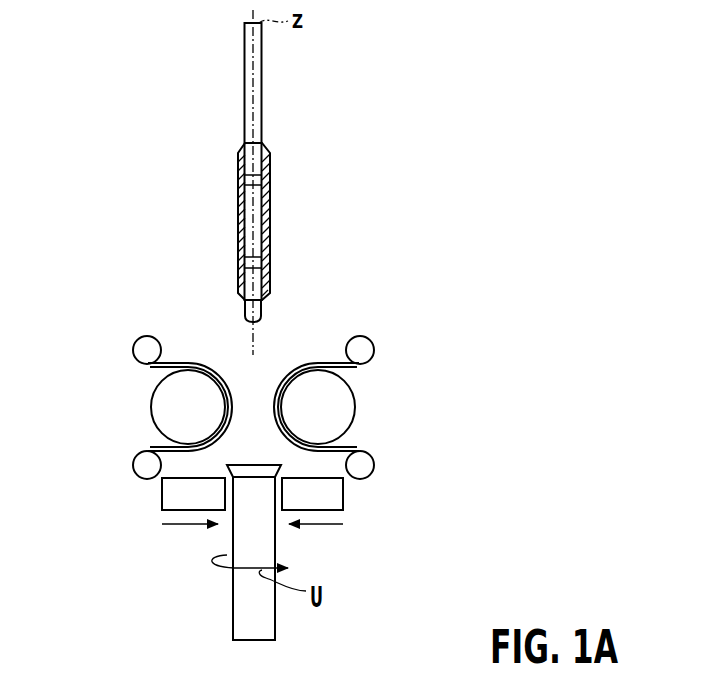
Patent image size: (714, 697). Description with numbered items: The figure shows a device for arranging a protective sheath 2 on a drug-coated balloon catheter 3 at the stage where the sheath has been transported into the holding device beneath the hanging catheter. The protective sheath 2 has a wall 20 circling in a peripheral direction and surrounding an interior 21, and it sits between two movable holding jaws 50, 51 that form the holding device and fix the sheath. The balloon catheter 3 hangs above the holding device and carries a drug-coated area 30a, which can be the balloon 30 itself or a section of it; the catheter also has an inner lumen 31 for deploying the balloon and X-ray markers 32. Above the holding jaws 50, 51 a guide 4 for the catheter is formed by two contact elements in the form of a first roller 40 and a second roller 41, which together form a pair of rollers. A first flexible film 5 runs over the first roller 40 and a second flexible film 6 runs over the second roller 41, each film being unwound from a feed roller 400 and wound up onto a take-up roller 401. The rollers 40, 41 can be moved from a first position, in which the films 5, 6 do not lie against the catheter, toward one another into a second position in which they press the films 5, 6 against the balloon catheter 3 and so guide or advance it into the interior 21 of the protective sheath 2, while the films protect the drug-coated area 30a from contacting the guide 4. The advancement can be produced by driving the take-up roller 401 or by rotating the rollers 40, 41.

The protective sheath 2 is at (210, 513).
The wall 20 is at (240, 591).
The interior 21 is at (256, 460).
The balloon catheter 3 is at (253, 172).
The balloon 30 is at (241, 273).
The drug-coated area 30a is at (271, 215).
The inner lumen 31 is at (251, 288).
The X-ray markers 32 is at (241, 258).
The guide 4 is at (254, 372).
The first roller 40 is at (168, 410).
The second roller 41 is at (338, 410).
The feed roller 400 is at (140, 352).
The take-up roller 401 is at (142, 467).
The first flexible film 5 is at (215, 371).
The second flexible film 6 is at (296, 371).
The holding jaw 50 is at (165, 503).
The holding jaw 51 is at (343, 505).